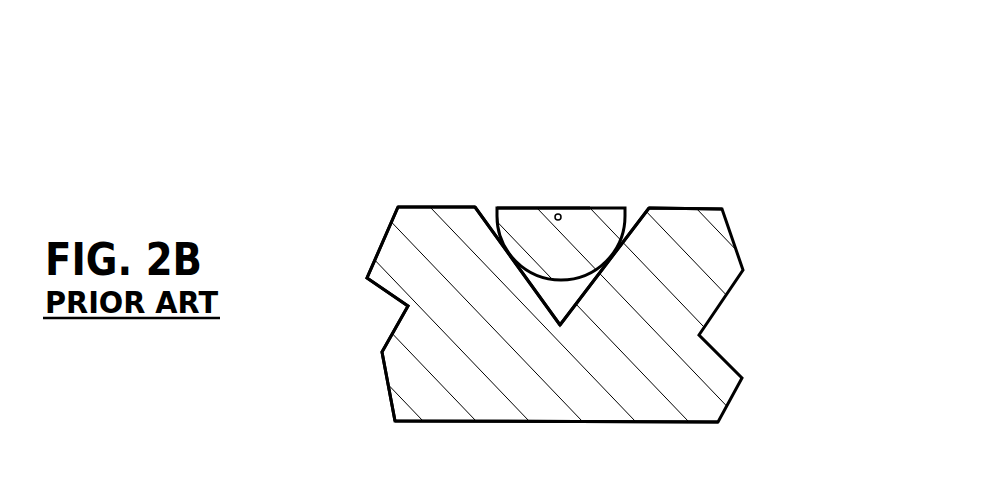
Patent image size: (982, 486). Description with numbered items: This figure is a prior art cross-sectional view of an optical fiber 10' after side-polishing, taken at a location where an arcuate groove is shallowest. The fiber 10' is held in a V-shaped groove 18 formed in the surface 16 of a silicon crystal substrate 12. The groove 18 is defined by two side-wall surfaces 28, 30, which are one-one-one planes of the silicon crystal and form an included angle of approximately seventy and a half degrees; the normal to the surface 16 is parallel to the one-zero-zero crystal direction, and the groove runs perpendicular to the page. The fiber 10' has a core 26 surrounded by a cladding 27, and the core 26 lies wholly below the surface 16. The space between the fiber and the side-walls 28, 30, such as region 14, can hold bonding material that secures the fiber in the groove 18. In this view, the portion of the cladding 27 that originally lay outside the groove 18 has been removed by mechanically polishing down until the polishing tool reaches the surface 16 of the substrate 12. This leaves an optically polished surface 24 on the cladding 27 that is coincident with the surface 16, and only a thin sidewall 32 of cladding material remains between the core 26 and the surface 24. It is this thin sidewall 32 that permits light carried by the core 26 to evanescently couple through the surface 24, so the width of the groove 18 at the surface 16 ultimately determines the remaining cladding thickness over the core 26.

The side-polished optical fiber 10' is at (559, 246).
The silicon crystal substrate 12 is at (652, 400).
The region 14 is at (556, 296).
The surface 16 is at (682, 209).
The V-shaped groove 18 is at (560, 325).
The optically polished surface 24 is at (600, 209).
The core 26 is at (562, 208).
The cladding 27 is at (523, 210).
The side-wall surface 28 is at (482, 222).
The side-wall surface 30 is at (637, 230).
The thin sidewall 32 is at (558, 213).